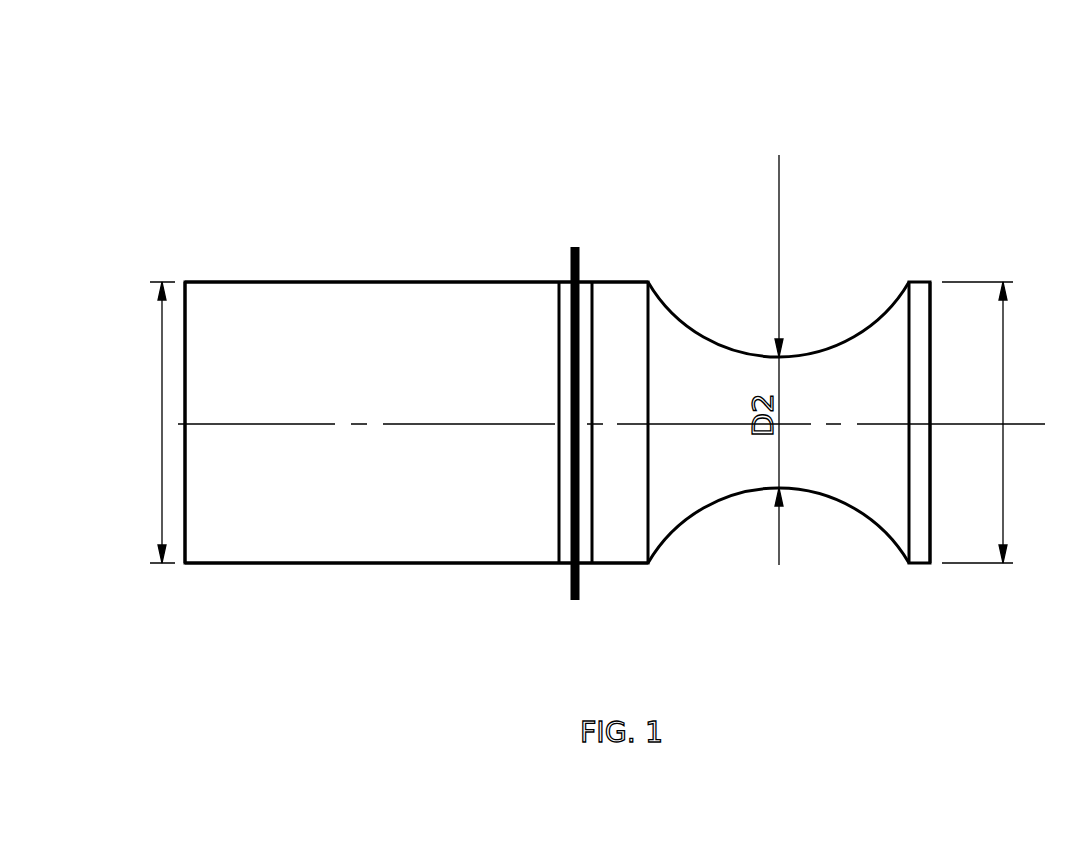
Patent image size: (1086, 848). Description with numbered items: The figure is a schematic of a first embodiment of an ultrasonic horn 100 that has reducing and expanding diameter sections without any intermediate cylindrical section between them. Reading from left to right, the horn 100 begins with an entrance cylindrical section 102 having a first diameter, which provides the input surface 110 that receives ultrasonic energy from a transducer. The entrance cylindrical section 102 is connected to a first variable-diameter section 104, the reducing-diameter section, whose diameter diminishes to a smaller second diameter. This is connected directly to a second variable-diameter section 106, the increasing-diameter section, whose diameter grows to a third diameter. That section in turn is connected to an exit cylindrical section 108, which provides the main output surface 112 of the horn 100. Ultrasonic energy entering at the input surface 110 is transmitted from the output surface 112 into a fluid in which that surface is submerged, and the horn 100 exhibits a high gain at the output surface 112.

The ultrasonic horn 100 is at (602, 106).
The entrance cylindrical section 102 is at (648, 270).
The first variable-diameter section 104 is at (779, 169).
The second variable-diameter section 106 is at (779, 169).
The exit cylindrical section 108 is at (833, 218).
The input surface 110 is at (185, 493).
The output surface 112 is at (930, 508).